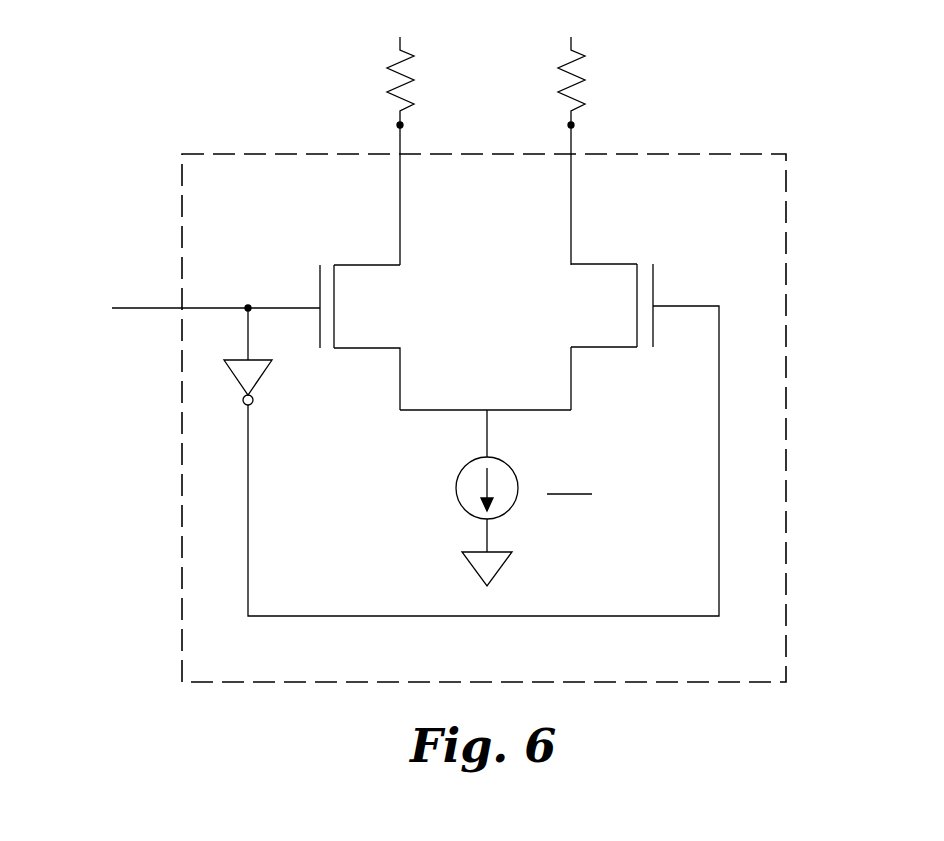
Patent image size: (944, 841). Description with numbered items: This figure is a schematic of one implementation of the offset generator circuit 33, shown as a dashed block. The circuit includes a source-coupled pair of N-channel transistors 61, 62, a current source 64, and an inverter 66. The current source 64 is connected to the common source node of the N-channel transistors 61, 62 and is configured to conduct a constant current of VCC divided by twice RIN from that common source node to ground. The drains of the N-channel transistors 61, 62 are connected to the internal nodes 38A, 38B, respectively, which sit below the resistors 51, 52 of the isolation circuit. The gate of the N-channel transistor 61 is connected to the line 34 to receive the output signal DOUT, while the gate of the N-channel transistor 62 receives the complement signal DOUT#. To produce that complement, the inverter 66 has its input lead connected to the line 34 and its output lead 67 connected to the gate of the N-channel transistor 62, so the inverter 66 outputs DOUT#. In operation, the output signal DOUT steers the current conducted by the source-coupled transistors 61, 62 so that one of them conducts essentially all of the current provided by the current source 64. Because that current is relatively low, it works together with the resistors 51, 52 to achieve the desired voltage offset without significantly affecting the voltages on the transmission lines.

The offset generator circuit 33 is at (786, 262).
The line 34 is at (153, 310).
The internal node 38A is at (402, 128).
The internal node 38B is at (573, 128).
The resistor 51 is at (400, 57).
The resistor 52 is at (571, 55).
The N-channel transistor 61 is at (360, 350).
The N-channel transistor 62 is at (617, 350).
The current source 64 is at (456, 488).
The inverter 66 is at (262, 375).
The output lead 67 is at (249, 530).